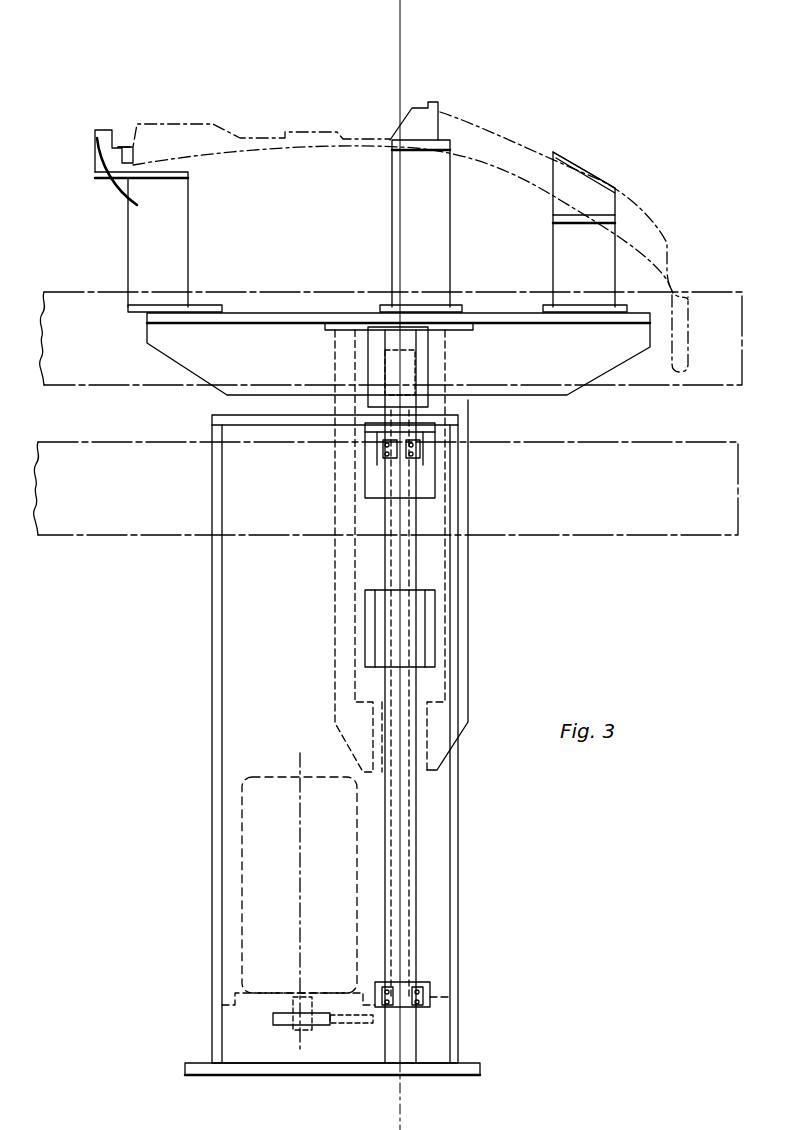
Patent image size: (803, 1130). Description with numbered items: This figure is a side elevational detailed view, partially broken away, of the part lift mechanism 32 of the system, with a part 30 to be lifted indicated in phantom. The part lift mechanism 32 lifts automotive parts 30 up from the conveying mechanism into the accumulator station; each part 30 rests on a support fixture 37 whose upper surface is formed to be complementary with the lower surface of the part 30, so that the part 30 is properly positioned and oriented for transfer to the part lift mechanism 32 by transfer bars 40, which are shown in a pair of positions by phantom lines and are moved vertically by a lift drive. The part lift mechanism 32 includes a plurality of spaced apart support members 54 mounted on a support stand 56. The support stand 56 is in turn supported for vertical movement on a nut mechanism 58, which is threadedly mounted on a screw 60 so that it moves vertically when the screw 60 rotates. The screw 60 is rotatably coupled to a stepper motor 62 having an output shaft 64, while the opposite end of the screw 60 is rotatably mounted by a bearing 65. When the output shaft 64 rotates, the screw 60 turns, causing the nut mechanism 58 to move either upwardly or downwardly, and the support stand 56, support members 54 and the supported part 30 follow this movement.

The automotive part 30 is at (310, 130).
The part lift mechanism 32 is at (90, 216).
The support fixture 37 is at (440, 124).
The transfer bar 40 is at (742, 386).
The support member 54 is at (98, 140).
The support stand 56 is at (580, 390).
The nut mechanism 58 is at (468, 582).
The screw 60 is at (415, 812).
The stepper motor 62 is at (285, 773).
The output shaft 64 is at (312, 998).
The bearing 65 is at (422, 448).